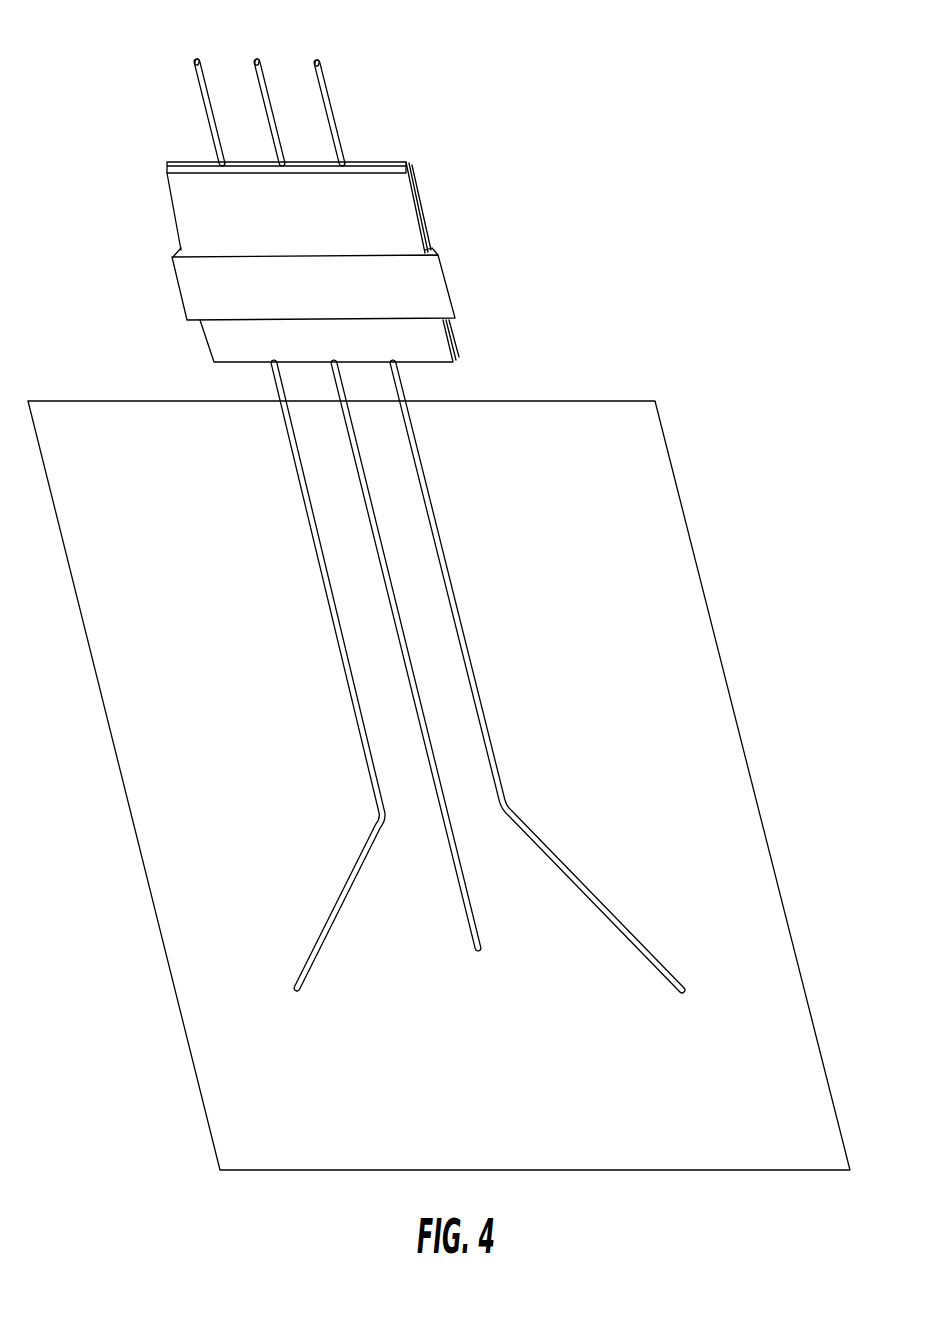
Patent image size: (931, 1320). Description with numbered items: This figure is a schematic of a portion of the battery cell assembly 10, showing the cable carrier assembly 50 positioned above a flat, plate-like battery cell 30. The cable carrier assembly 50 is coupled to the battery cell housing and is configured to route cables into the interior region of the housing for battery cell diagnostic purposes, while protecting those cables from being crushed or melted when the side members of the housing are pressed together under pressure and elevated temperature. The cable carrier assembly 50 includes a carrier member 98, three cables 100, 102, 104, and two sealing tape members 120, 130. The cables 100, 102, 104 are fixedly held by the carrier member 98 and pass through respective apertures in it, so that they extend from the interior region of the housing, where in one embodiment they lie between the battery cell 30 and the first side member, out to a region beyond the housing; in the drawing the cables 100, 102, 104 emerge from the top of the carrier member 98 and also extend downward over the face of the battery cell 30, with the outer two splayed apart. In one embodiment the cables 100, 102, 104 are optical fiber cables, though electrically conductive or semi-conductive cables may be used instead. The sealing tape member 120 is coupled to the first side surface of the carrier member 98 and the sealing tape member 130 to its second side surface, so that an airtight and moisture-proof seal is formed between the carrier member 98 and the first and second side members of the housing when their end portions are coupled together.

The battery cell assembly 10 is at (667, 85).
The battery cell 30 is at (653, 456).
The cable carrier assembly 50 is at (406, 160).
The carrier member 98 is at (182, 162).
The cable 100 is at (196, 60).
The cable 102 is at (259, 65).
The cable 104 is at (323, 68).
The sealing tape member 120 is at (213, 288).
The sealing tape member 130 is at (180, 250).